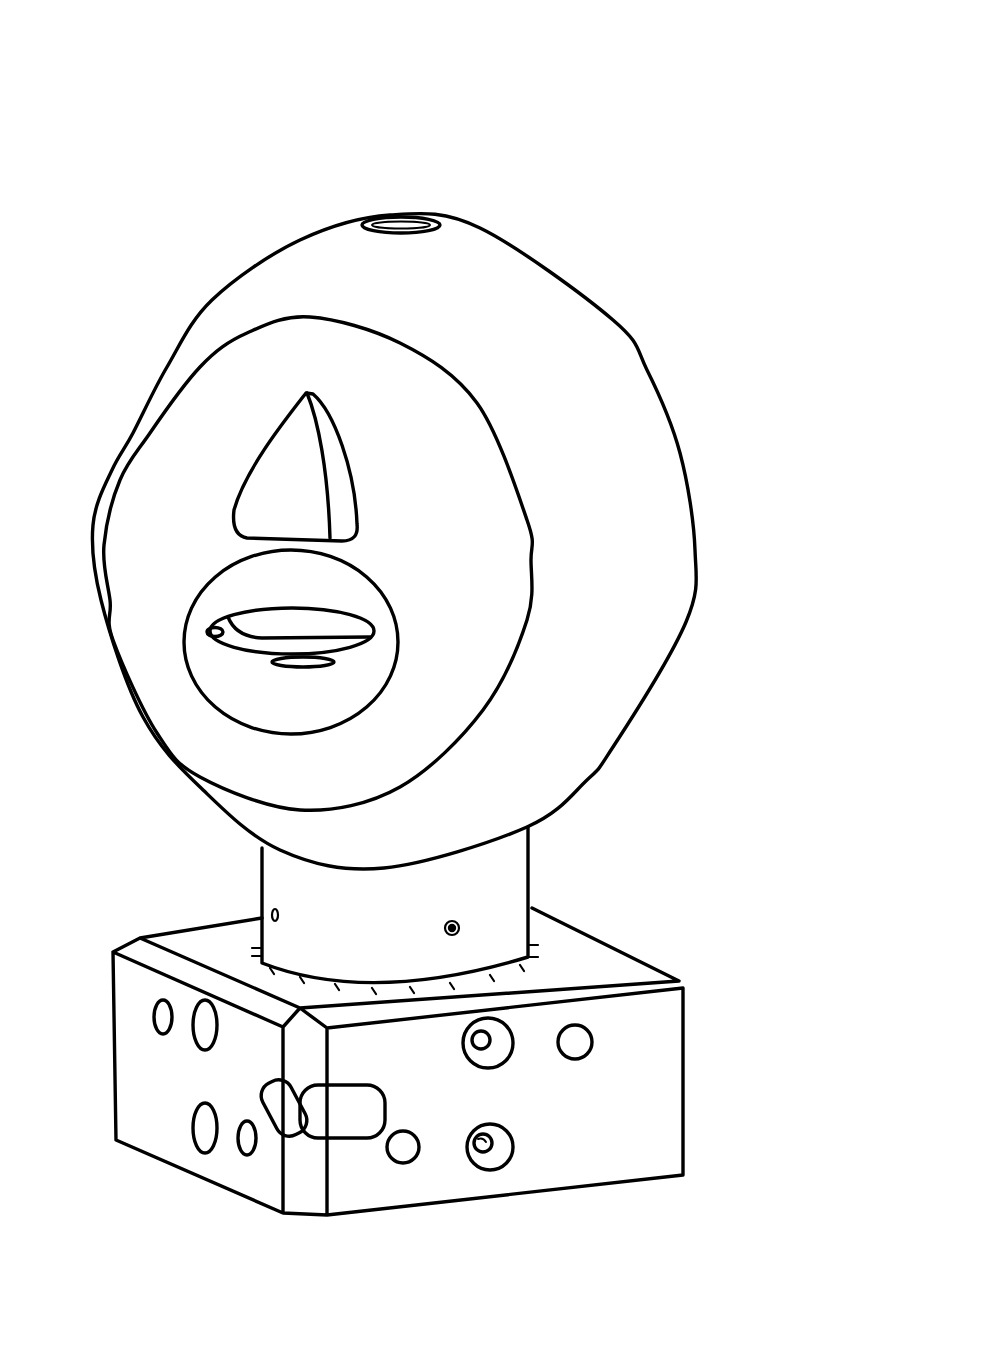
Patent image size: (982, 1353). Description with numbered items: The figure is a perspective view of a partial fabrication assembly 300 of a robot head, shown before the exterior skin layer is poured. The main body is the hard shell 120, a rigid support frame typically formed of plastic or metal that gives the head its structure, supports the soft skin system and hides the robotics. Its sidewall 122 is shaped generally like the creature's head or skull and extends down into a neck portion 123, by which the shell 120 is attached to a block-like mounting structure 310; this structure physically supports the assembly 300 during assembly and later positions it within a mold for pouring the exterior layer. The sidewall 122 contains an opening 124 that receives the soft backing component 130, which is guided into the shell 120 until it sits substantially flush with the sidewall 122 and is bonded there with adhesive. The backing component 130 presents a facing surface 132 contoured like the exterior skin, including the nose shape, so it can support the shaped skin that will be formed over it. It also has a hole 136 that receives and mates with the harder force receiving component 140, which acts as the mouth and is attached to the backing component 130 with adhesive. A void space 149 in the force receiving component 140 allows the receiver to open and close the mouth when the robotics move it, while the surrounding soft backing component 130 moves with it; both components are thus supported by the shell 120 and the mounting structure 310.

The fabrication assembly 300 is at (632, 180).
The hard shell 120 is at (656, 330).
The sidewall 122 is at (622, 622).
The opening 124 is at (507, 448).
The soft backing component 130 is at (192, 423).
The facing surface 132 is at (438, 475).
The hole 136 is at (392, 608).
The force receiving component 140 is at (268, 688).
The void space 149 is at (220, 633).
The neck portion 123 is at (492, 900).
The mounting structure 310 is at (685, 1077).